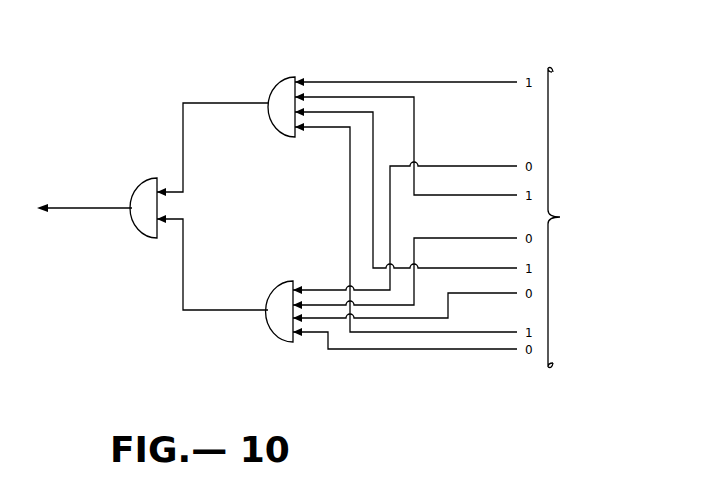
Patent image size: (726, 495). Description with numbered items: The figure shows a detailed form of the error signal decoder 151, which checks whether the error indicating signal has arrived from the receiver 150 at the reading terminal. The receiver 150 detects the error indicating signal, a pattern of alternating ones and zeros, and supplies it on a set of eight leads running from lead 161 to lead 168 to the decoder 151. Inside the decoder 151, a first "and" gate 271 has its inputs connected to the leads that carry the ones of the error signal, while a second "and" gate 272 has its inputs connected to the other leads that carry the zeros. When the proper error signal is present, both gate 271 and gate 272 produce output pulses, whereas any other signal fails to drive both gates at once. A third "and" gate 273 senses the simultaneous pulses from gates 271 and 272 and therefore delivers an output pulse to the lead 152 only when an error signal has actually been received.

The receiver 150 is at (614, 218).
The error signal decoder 151 is at (290, 220).
The lead 152 is at (82, 194).
The lead 161 is at (462, 82).
The lead 168 is at (445, 351).
The and gate 271 is at (273, 88).
The and gate 272 is at (279, 337).
The and gate 273 is at (135, 227).